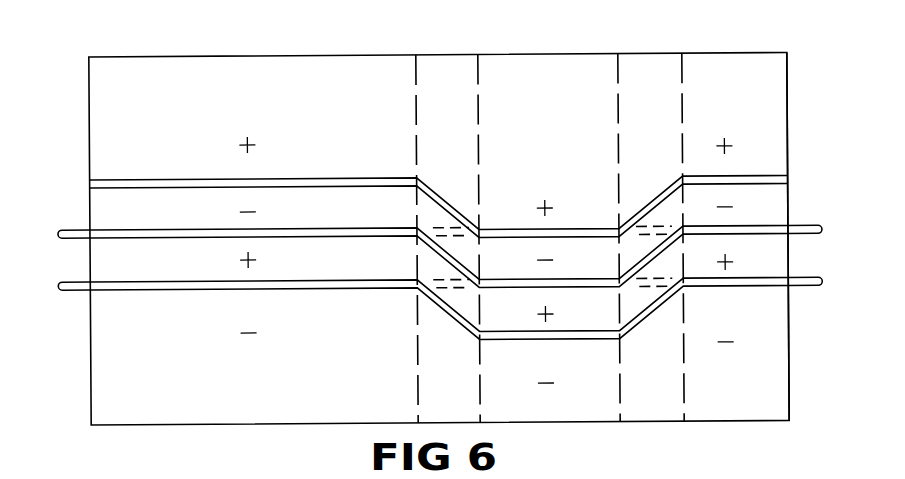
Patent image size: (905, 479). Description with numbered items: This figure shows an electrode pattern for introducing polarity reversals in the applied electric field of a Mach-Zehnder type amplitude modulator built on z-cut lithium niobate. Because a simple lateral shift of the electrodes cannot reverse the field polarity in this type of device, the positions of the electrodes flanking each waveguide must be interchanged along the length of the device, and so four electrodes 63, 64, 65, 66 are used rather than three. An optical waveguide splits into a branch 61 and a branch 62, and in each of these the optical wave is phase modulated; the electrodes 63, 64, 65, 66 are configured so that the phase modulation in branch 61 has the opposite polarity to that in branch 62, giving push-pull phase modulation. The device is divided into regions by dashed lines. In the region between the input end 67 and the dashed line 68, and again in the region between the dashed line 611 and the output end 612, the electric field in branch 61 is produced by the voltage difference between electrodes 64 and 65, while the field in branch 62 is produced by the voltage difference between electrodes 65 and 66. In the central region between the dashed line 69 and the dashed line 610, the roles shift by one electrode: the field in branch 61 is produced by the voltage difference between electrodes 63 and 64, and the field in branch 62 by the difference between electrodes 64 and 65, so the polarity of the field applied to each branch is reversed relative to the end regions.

The waveguide branch 61 is at (66, 230).
The waveguide branch 62 is at (78, 291).
The electrode 63 is at (363, 140).
The electrode 64 is at (385, 220).
The electrode 65 is at (385, 272).
The electrode 66 is at (388, 372).
The input end 67 is at (90, 102).
The dashed line 68 is at (417, 94).
The dashed line 69 is at (479, 118).
The dashed line 610 is at (619, 113).
The dashed line 611 is at (683, 126).
The output end 612 is at (788, 112).